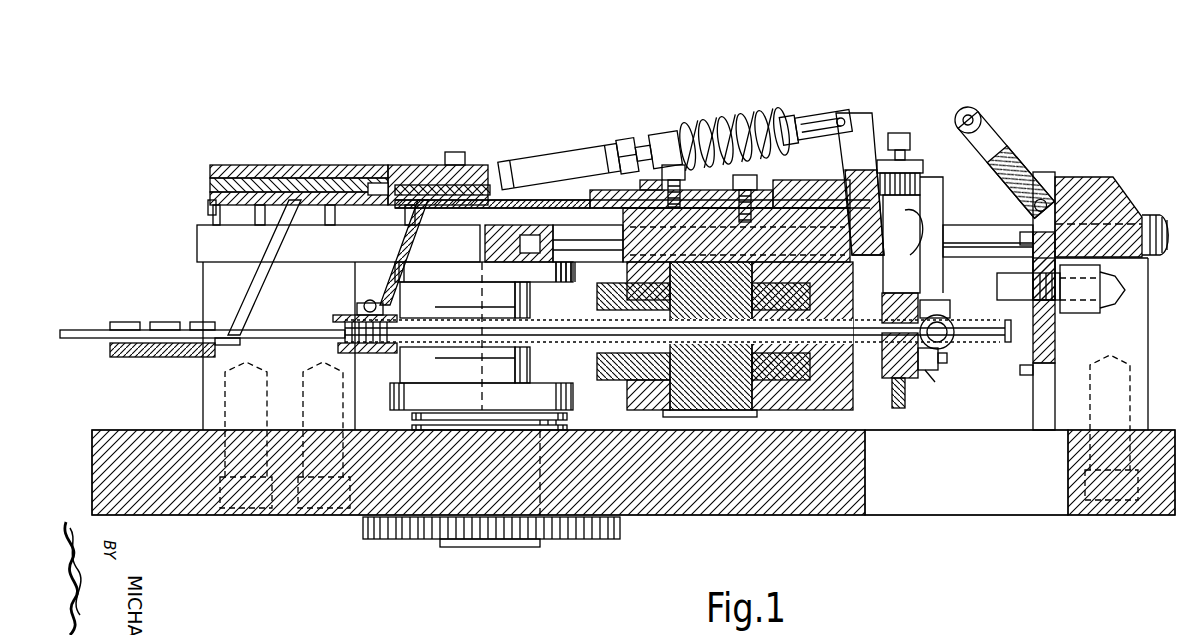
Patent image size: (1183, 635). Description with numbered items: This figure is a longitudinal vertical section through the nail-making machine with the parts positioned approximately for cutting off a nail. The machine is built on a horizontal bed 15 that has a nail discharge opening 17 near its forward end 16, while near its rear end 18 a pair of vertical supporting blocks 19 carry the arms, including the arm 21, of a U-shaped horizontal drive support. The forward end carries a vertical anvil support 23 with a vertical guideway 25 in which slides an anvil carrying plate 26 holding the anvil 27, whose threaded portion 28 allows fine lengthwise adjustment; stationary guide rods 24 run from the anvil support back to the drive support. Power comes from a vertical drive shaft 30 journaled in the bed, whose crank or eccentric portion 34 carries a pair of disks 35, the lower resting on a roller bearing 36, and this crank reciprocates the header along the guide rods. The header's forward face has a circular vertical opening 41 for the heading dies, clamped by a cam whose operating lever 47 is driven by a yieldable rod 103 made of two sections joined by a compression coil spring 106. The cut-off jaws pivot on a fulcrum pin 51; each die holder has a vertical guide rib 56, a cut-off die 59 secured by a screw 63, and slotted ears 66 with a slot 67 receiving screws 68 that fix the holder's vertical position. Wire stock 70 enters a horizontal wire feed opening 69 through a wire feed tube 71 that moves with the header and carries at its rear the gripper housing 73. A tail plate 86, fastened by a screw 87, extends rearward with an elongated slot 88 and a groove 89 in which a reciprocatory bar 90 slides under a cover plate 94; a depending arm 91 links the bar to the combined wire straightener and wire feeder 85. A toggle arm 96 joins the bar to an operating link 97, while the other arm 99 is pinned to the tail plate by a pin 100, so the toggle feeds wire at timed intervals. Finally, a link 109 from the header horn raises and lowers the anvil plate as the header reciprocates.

The horizontal bed 15 is at (735, 520).
The forward end 16 is at (1157, 515).
The nail discharge opening 17 is at (962, 505).
The rear end 18 is at (160, 515).
The vertical supporting blocks 19 is at (212, 286).
The arm 21 is at (205, 242).
The vertical anvil support 23 is at (1110, 178).
The stationary guide rods 24 is at (965, 228).
The vertical guideway 25 is at (1052, 185).
The anvil carrying plate 26 is at (1058, 340).
The anvil 27 is at (1010, 283).
The threaded portion 28 is at (1092, 289).
The drive shaft 30 is at (540, 485).
The crank or eccentric portion 34 is at (425, 365).
The disks 35 is at (412, 400).
The roller bearing 36 is at (570, 420).
The circular vertical opening 41 is at (790, 290).
The operating lever 47 is at (852, 148).
The fulcrum pin 51 is at (728, 402).
The vertical guide rib 56 is at (925, 370).
The cut-off die 59 is at (955, 340).
The screw 63 is at (945, 305).
The upper and lower lobes or ears 66 is at (938, 370).
The slot 67 is at (944, 384).
The screws 68 is at (947, 358).
The horizontal wire feed opening 69 is at (848, 345).
The wire stock 70 is at (283, 330).
The wire feed tube 71 is at (437, 317).
The housing 73 is at (372, 353).
The combined wire straightener and wire feeder 85 is at (110, 357).
The tail plate 86 is at (210, 205).
The screw 87 is at (748, 180).
The elongated slot 88 is at (335, 198).
The groove 89 is at (565, 196).
The reciprocatory bar 90 is at (372, 180).
The depending arm 91 is at (282, 243).
The cover plate 94 is at (272, 168).
The toggle arm 96 is at (430, 200).
The operating link 97 is at (410, 178).
The toggle arm 99 is at (640, 182).
The pin 100 is at (673, 165).
The yieldable rod 103 is at (578, 160).
The compression coil spring 106 is at (720, 118).
The link 109 is at (1000, 160).